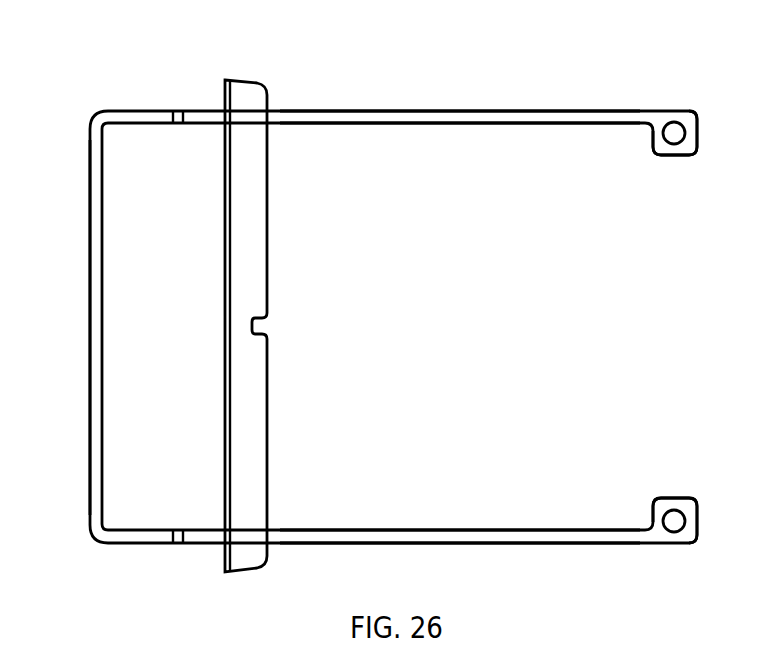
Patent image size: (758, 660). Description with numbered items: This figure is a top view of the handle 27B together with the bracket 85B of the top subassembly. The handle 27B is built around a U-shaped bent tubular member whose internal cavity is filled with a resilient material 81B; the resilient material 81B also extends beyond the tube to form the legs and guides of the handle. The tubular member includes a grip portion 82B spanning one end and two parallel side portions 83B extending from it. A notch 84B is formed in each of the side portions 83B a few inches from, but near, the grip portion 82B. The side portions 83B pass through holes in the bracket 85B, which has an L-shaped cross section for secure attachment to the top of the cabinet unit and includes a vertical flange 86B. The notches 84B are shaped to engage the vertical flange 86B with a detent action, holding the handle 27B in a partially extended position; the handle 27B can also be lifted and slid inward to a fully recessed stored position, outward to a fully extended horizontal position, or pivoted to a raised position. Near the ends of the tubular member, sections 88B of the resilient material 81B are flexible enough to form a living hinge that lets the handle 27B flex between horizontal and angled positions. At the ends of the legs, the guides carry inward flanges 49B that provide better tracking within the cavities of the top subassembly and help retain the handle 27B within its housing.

The handle 27B is at (82, 112).
The resilient material 81B is at (560, 111).
The grip portion 82B is at (85, 303).
The side portions 83B is at (405, 111).
The notch 84B is at (178, 125).
The bracket 85B is at (218, 82).
The vertical flange 86B is at (225, 287).
The sections of resilient material 88B is at (490, 124).
The inward flanges 49B is at (673, 156).